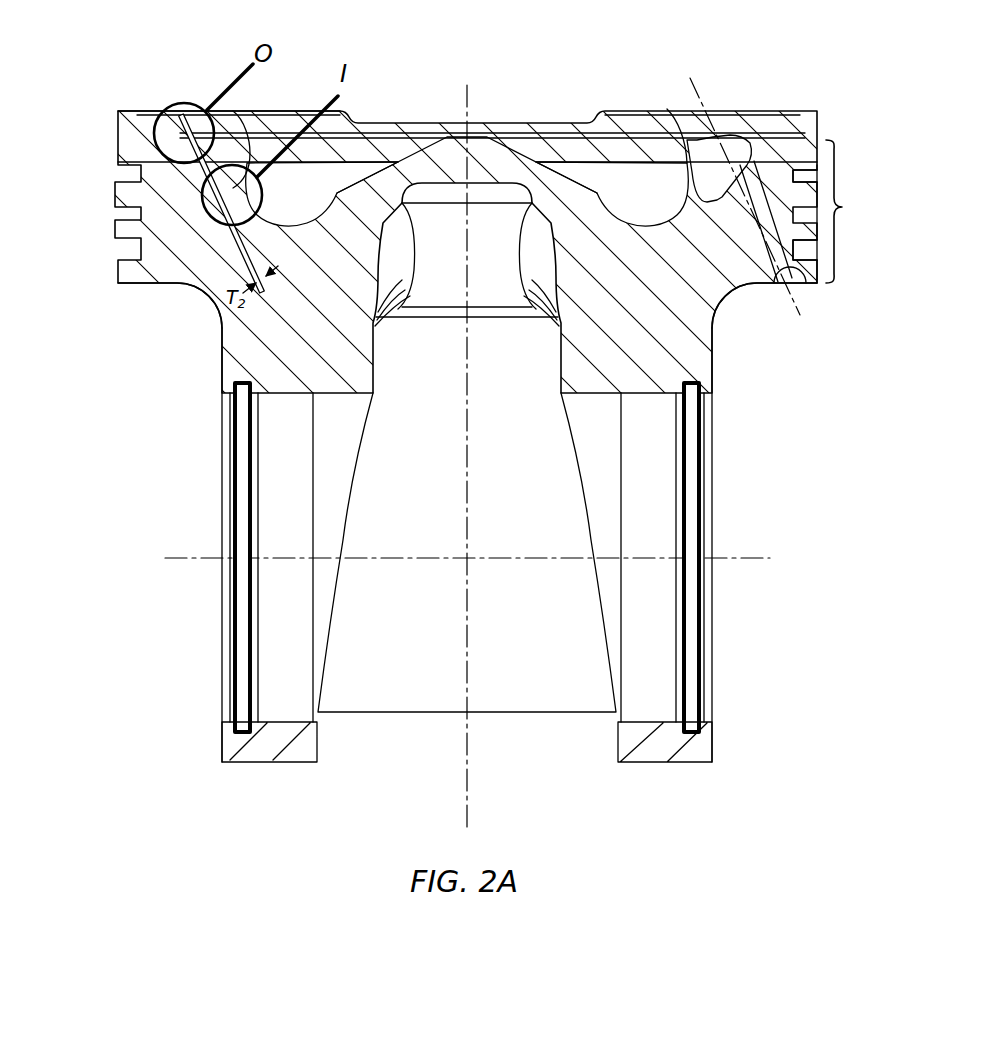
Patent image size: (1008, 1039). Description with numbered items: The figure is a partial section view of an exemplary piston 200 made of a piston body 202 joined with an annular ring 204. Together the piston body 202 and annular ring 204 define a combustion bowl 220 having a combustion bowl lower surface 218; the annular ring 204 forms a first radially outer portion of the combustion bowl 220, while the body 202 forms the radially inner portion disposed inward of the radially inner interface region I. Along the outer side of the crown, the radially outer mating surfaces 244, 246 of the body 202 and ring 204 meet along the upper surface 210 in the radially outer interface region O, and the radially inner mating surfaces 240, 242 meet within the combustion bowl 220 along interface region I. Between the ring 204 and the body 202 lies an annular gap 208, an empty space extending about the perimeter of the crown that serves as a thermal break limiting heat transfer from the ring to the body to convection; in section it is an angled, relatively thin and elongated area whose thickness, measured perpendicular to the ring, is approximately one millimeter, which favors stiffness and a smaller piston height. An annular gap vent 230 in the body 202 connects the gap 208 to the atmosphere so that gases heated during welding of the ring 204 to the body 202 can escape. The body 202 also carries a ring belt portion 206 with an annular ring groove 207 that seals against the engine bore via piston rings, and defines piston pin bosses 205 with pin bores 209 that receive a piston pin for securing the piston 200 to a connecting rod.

The piston 200 is at (82, 80).
The piston body 202 is at (713, 295).
The annular ring 204 is at (668, 140).
The piston pin bosses 205 is at (297, 751).
The ring belt portion 206 is at (851, 211).
The ring groove 207 is at (812, 178).
The annular gap 208 is at (752, 150).
The pin bores 209 is at (270, 396).
The upper surface 210 is at (143, 110).
The combustion bowl lower surface 218 is at (322, 125).
The combustion bowl 220 is at (390, 160).
The annular gap vent 230 is at (785, 250).
The radially inner mating surface of the body 240 is at (246, 130).
The radially inner mating surface of the ring 242 is at (190, 300).
The radially outer mating surface of the body 244 is at (188, 112).
The radially outer mating surface of the ring 246 is at (183, 132).